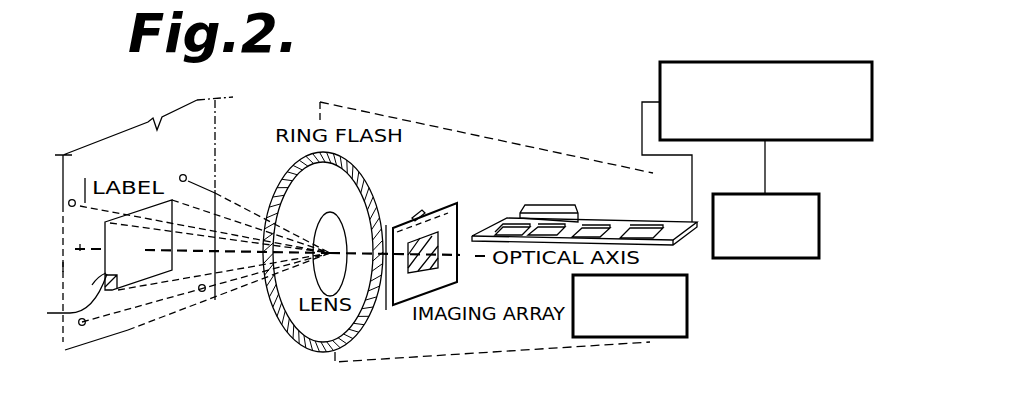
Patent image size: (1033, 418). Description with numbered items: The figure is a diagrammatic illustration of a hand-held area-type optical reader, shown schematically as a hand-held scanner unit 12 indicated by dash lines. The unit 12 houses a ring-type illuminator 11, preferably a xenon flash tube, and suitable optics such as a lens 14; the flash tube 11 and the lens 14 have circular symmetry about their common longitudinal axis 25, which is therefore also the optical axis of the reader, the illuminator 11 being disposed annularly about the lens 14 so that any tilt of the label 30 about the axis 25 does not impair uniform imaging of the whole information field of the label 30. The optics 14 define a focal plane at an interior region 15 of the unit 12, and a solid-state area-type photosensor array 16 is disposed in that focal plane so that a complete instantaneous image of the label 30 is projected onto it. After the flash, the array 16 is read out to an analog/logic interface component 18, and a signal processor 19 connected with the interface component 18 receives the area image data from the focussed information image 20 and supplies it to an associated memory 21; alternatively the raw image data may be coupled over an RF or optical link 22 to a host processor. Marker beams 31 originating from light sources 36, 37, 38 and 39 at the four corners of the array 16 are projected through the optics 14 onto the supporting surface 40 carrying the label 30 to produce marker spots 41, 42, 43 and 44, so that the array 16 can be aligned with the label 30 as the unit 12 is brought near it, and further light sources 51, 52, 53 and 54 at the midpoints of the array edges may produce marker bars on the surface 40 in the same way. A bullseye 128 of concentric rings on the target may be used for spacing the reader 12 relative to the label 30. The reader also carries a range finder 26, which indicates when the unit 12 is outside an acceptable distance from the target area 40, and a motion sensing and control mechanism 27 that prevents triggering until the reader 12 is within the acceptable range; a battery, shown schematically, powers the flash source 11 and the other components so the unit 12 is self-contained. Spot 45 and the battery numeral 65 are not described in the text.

The ring-type illuminator 11 is at (290, 325).
The hand-held scanner unit 12 is at (538, 351).
The lens 14 is at (323, 217).
The interior region 15 is at (448, 264).
The photosensor array 16 is at (458, 206).
The analog/logic interface component 18 is at (535, 210).
The signal processor 19 is at (650, 224).
The focussed information image 20 is at (458, 236).
The memory 21 is at (600, 224).
The RF or optical link 22 is at (578, 210).
The longitudinal axis 25 is at (280, 241).
The range finder 26 is at (824, 259).
The motion sensing and control mechanism 27 is at (822, 61).
The label 30 is at (91, 288).
The marker beams 31 is at (237, 300).
The light source 36 is at (457, 282).
The light source 37 is at (395, 303).
The light source 38 is at (455, 203).
The light source 39 is at (393, 228).
The supporting surface 40 is at (126, 332).
The marker spot 41 is at (63, 203).
The marker spot 42 is at (183, 175).
The marker spot 43 is at (78, 325).
The marker spot 44 is at (205, 291).
The target surface 45 is at (63, 267).
The light source 51 is at (427, 194).
The light source 52 is at (458, 240).
The light source 53 is at (428, 294).
The light source 54 is at (387, 308).
The battery 65 is at (688, 299).
The bullseye 128 is at (88, 262).